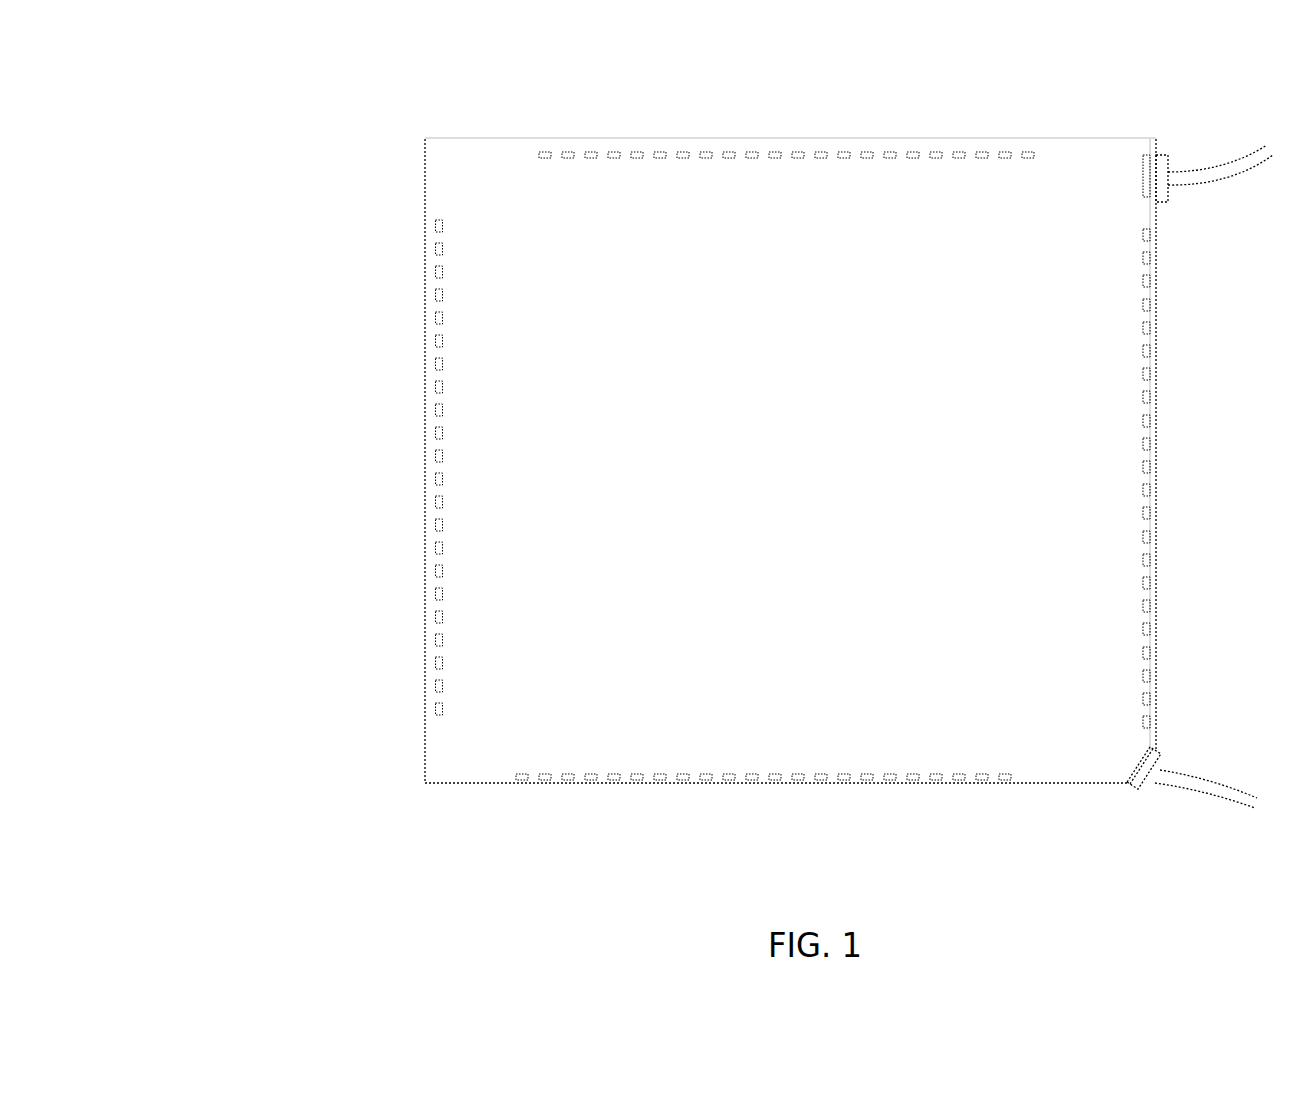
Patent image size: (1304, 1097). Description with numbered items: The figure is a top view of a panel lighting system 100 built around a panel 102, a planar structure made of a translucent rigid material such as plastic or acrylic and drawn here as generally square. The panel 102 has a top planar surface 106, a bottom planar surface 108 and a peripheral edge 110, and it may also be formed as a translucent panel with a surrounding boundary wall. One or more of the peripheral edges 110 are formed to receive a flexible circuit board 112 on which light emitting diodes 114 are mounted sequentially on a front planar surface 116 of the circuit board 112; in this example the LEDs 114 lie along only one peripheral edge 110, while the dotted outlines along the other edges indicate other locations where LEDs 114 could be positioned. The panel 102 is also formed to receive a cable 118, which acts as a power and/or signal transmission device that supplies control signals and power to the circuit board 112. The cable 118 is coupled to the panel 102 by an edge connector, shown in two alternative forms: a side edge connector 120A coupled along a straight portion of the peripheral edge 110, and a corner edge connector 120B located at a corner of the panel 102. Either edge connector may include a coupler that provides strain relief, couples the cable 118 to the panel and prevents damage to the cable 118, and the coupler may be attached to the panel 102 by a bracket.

The panel lighting system 100 is at (285, 92).
The panel 102 is at (460, 787).
The top planar surface 106 is at (978, 190).
The bottom planar surface 108 is at (850, 128).
The peripheral edge 110 is at (1168, 323).
The flexible circuit board 112 is at (1153, 622).
The light emitting diodes 114 is at (1137, 277).
The front planar surface 116 is at (1148, 478).
The cable 118 is at (1218, 185).
The side edge connector 120A is at (1170, 150).
The corner edge connector 120B is at (1140, 793).